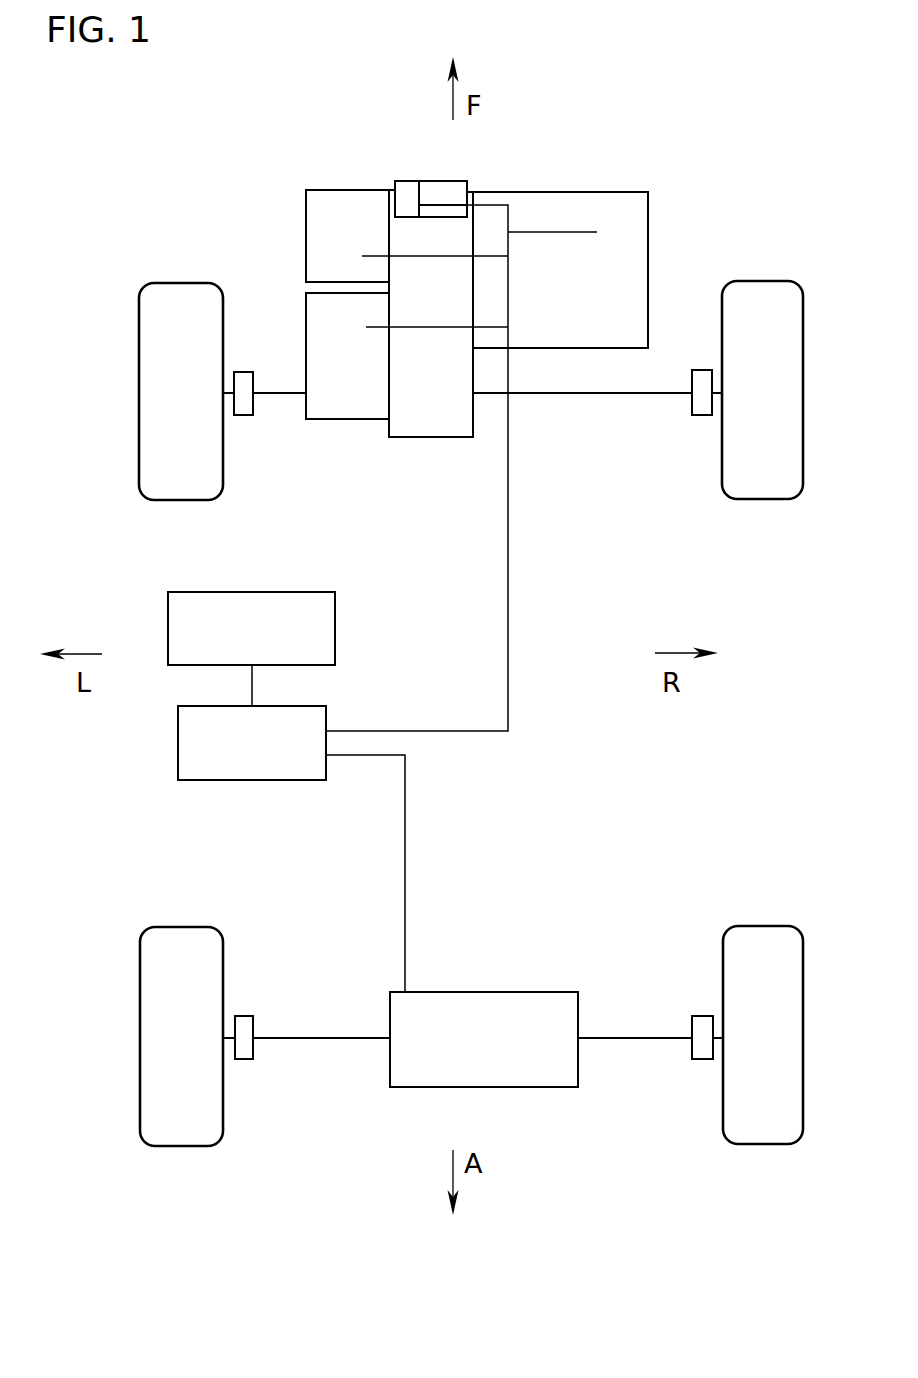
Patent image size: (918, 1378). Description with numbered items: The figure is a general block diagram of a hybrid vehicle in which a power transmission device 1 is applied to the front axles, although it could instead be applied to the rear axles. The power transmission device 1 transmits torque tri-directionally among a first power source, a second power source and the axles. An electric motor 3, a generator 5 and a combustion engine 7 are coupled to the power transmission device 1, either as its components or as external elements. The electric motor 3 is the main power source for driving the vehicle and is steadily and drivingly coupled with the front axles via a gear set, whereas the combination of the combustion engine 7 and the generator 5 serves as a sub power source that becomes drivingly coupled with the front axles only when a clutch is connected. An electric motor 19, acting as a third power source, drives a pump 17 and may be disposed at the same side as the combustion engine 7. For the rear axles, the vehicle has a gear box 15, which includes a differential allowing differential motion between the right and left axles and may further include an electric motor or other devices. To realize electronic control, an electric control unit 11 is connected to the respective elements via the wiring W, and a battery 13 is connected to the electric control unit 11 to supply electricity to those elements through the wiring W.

The power transmission device 1 is at (440, 438).
The electric motor 3 is at (340, 420).
The generator 5 is at (350, 189).
The combustion engine 7 is at (587, 189).
The electric control unit 11 is at (239, 757).
The battery 13 is at (239, 643).
The gear box 15 is at (469, 1055).
The pump 17 is at (407, 180).
The electric motor 19 is at (445, 180).
The wiring W is at (406, 772).